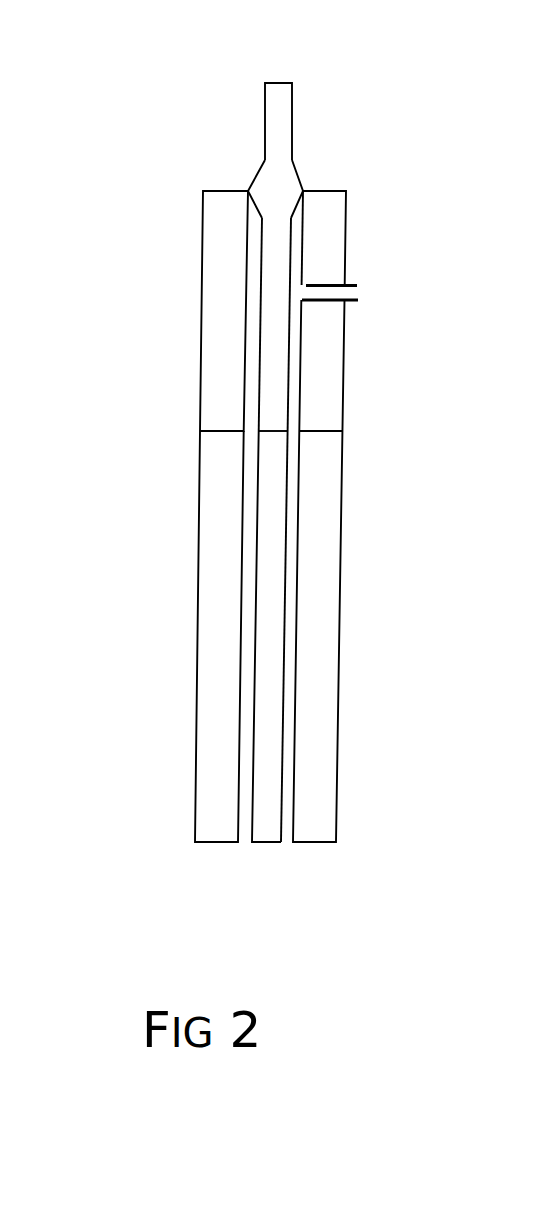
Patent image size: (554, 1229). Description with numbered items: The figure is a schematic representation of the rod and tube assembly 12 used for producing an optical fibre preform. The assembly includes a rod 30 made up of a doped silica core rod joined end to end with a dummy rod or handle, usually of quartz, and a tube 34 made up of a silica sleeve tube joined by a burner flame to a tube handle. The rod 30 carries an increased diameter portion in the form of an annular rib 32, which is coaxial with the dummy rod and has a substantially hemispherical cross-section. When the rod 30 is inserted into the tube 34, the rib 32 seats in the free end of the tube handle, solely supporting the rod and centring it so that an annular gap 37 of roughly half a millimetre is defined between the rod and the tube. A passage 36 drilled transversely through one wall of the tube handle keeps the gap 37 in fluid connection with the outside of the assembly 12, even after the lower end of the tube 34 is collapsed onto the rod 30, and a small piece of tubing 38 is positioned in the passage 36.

The rod and tube assembly 12 is at (126, 140).
The rod 30 is at (300, 108).
The annular rib 32 is at (287, 188).
The passage 36 is at (307, 286).
The tubing 38 is at (358, 300).
The tube 34 is at (352, 460).
The annular gap 37 is at (288, 643).